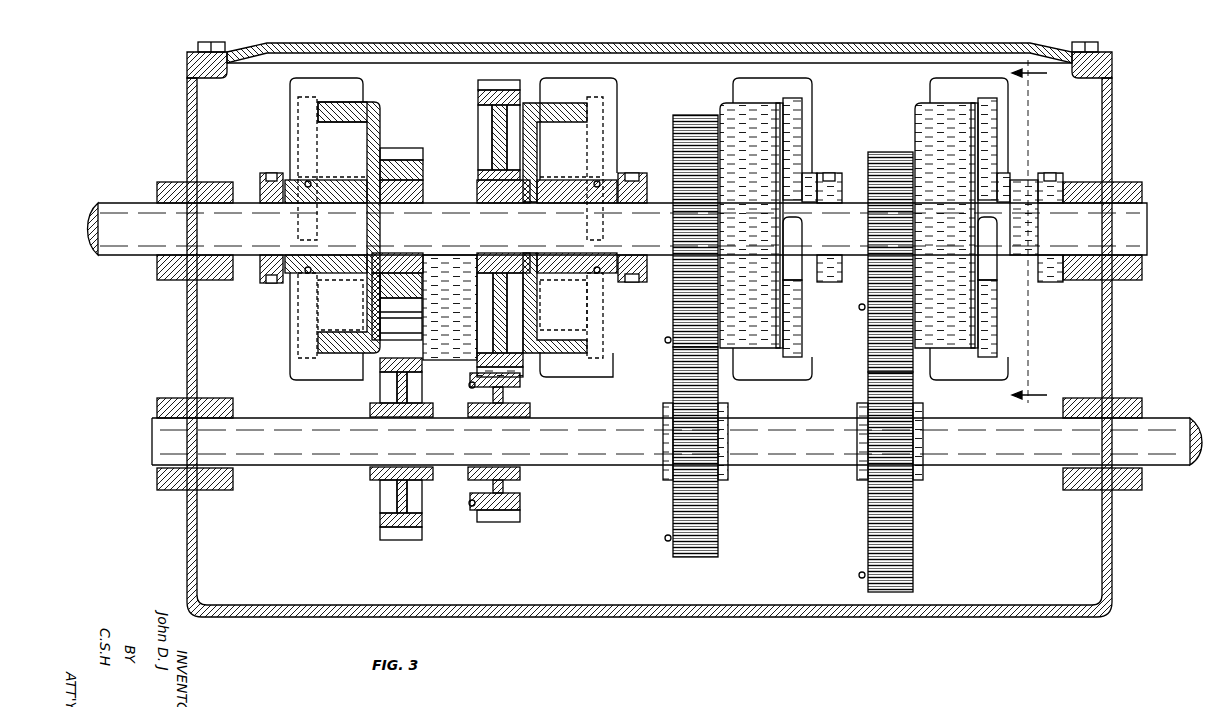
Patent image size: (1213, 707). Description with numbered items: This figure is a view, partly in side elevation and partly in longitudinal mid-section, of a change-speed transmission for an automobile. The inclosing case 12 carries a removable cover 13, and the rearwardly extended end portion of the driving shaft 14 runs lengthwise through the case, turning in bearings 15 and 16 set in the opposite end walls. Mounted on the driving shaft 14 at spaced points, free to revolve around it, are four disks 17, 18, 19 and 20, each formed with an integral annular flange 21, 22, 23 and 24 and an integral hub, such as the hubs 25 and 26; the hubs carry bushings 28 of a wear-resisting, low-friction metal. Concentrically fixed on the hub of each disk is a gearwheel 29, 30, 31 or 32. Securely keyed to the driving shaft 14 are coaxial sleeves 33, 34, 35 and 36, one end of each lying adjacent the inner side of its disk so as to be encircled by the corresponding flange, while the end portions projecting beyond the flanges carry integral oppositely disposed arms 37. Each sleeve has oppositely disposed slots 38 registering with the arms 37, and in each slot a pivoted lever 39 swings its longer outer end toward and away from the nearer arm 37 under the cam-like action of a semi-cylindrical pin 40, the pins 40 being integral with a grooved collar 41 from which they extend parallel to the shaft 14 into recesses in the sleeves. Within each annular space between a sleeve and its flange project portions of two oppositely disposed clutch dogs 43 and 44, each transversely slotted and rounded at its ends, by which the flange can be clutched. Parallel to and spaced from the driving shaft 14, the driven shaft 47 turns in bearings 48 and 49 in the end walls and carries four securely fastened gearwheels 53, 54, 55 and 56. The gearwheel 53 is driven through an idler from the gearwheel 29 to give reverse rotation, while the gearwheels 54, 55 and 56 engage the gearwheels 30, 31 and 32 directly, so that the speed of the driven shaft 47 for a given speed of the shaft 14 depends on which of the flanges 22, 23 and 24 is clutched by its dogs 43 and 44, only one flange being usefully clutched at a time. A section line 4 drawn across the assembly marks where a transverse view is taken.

The section line 4- 4 is at (1029, 238).
The inclosing case 12 is at (638, 612).
The removable cover 13 is at (433, 43).
The driving shaft 14 is at (114, 203).
The bearing 15 is at (158, 268).
The bearing 16 is at (1140, 262).
The disk 17 is at (367, 102).
The disk 18 is at (530, 104).
The disk 19 is at (723, 103).
The disk 20 is at (925, 108).
The annular flange 21 is at (344, 122).
The annular flange 22 is at (581, 122).
The annular flange 23 is at (773, 138).
The annular flange 24 is at (967, 137).
The hub 25 is at (425, 188).
The hub 26 is at (487, 192).
The bushing 28 is at (477, 257).
The gearwheel 29 is at (402, 148).
The gearwheel 30 is at (482, 88).
The gearwheel 31 is at (673, 117).
The gearwheel 32 is at (883, 152).
The sleeve 33 is at (345, 275).
The sleeve 34 is at (575, 273).
The sleeve 35 is at (810, 175).
The sleeve 36 is at (1008, 171).
The arm 37 is at (793, 127).
The slot 38 is at (788, 220).
The lever 39 is at (797, 293).
The semi-cylindrical pin 40 is at (1023, 227).
The grooved collar 41 is at (277, 155).
The clutch dog 43 is at (290, 88).
The clutch dog 44 is at (297, 366).
The driven shaft 47 is at (1168, 425).
The bearing 48 is at (163, 490).
The bearing 49 is at (1127, 478).
The gearwheel 53 is at (422, 523).
The gearwheel 54 is at (510, 513).
The gearwheel 55 is at (705, 557).
The gearwheel 56 is at (913, 558).